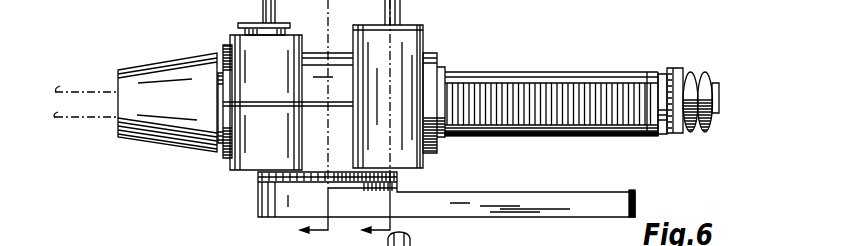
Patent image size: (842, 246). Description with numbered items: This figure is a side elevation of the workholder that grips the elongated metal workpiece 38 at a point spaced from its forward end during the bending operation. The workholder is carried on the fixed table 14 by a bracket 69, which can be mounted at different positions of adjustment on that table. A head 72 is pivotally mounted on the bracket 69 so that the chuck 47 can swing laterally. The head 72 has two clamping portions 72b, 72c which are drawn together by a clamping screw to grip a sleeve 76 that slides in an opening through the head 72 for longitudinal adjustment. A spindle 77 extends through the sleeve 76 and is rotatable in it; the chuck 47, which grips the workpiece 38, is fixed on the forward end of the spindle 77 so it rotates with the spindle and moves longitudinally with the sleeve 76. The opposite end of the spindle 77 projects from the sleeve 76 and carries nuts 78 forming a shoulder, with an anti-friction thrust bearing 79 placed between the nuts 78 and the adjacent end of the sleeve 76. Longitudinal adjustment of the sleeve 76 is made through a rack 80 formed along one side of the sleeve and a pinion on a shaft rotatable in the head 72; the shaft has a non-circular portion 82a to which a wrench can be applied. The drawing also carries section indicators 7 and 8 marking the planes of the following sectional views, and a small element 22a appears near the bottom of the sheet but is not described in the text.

The fixed table 14 is at (258, 11).
The workpiece 38 is at (74, 90).
The chuck 47 is at (181, 64).
The head 72 is at (311, 64).
The clamping portion 72b is at (312, 88).
The clamping portion 72c is at (310, 138).
The non-circular portion 82a is at (403, 13).
The sleeve 76 is at (500, 72).
The rack 80 is at (564, 93).
The anti-friction thrust bearing 79 is at (672, 70).
The nuts 78 is at (706, 73).
The spindle 77 is at (716, 101).
The bracket 69 is at (525, 192).
The section line 7- 7 is at (306, 214).
The section line 8- 8 is at (369, 206).
The nut 22a is at (421, 239).